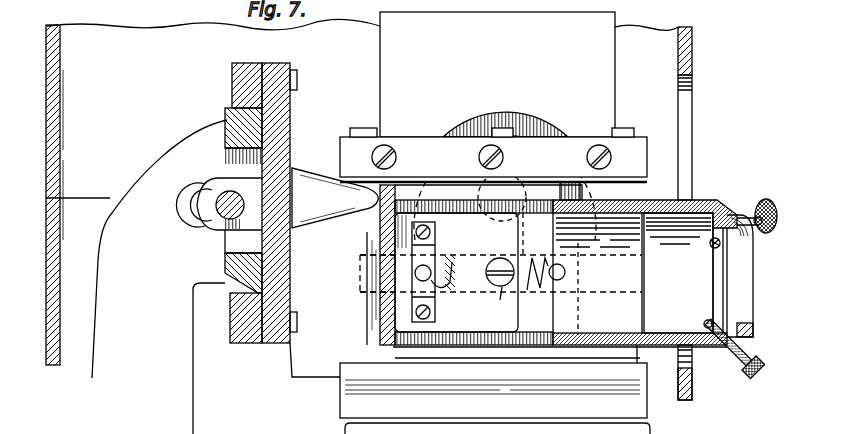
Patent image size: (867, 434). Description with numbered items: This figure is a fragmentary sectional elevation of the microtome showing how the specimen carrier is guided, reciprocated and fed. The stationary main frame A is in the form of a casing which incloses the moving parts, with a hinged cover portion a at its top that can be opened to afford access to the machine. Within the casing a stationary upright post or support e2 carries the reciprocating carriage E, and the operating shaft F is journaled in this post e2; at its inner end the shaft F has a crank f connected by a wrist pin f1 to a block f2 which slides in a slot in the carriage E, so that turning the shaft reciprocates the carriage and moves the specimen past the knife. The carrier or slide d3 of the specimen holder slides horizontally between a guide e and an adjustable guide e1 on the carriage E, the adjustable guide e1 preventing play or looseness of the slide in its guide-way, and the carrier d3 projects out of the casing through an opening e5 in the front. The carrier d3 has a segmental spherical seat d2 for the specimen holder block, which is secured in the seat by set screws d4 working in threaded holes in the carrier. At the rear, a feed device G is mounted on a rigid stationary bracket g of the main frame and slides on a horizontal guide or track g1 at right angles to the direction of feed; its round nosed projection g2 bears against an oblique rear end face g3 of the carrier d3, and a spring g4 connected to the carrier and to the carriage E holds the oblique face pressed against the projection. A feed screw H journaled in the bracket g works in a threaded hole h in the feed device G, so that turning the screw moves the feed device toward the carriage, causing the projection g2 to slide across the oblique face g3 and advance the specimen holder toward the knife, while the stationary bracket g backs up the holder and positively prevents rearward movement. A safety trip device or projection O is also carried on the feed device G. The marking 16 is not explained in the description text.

The wall a is at (62, 63).
The base plate A is at (65, 183).
The curved support arm g is at (159, 277).
The upright block G is at (278, 139).
The clamp block g1 is at (232, 120).
The ring eye O is at (172, 216).
The clamp arm H is at (221, 223).
The pin h is at (220, 190).
The wedge spring g2 is at (335, 198).
The side plate g3 is at (342, 304).
The upper casing e2 is at (497, 74).
The coil F is at (487, 190).
The cover plate e1 is at (493, 155).
The pillar e5 is at (693, 138).
The electromagnet housing E is at (650, 178).
The contact bracket f is at (480, 238).
The adjusting screw f2 is at (490, 272).
The contact f1 is at (496, 305).
The coil spring g4 is at (546, 290).
The inner casing d3 is at (653, 272).
The knurled knob d4 is at (768, 205).
The clamping screw d2 is at (747, 327).
The base block e is at (350, 370).
The lead 16 is at (113, 426).